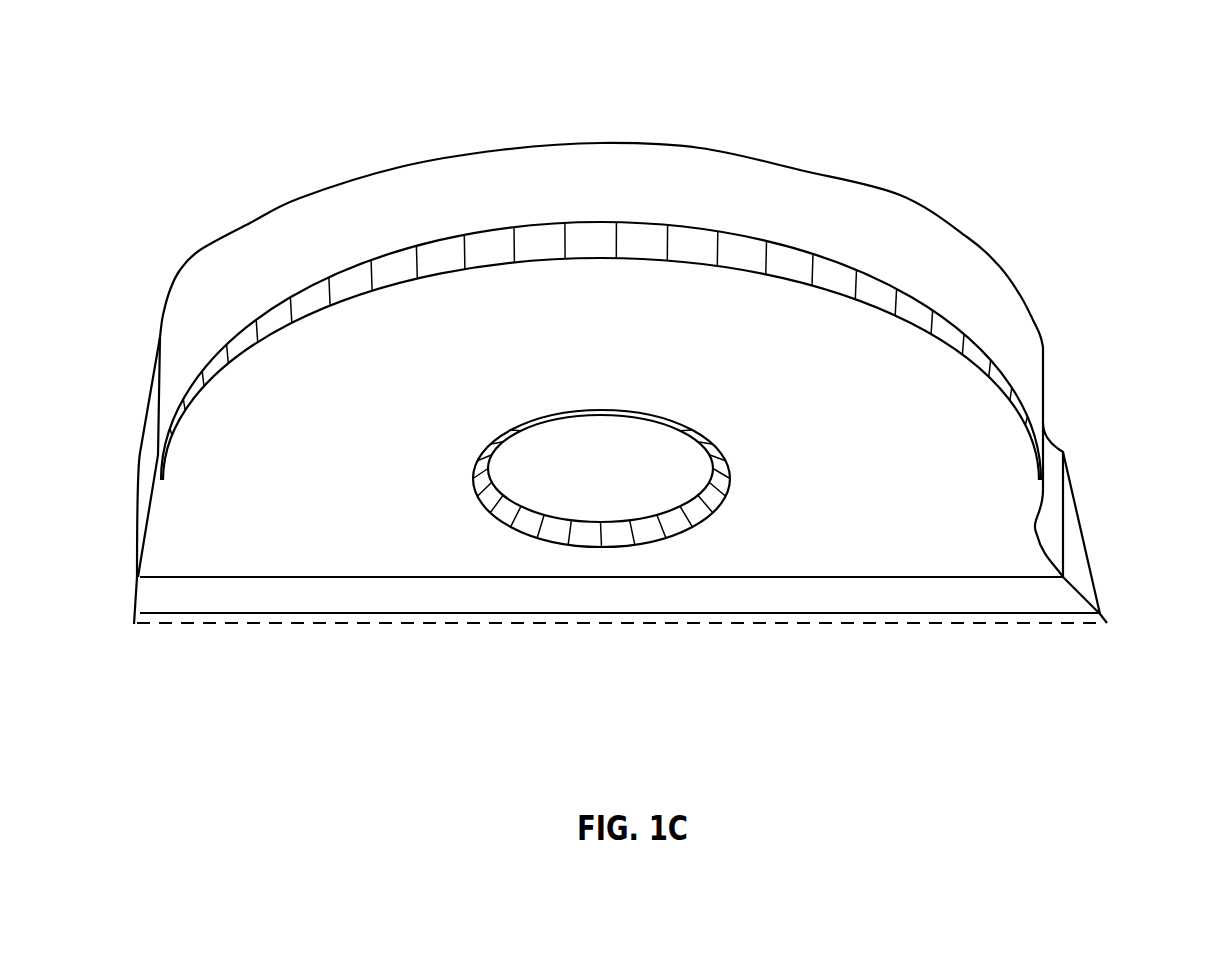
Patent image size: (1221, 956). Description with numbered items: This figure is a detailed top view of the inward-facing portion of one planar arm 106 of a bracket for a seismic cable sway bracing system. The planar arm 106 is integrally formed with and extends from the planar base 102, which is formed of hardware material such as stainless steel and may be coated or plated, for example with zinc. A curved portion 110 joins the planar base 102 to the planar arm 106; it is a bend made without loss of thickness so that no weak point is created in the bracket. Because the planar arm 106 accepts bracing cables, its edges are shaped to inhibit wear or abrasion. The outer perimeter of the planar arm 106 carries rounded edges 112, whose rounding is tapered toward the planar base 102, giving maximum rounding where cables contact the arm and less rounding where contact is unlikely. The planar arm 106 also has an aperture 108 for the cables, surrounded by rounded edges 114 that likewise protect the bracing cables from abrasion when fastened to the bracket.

The planar base 102 is at (943, 620).
The planar arm 106 is at (427, 198).
The aperture 108 is at (610, 468).
The curved portion 110 is at (1037, 595).
The rounded edges 112 is at (737, 253).
The rounded edges 114 is at (650, 527).